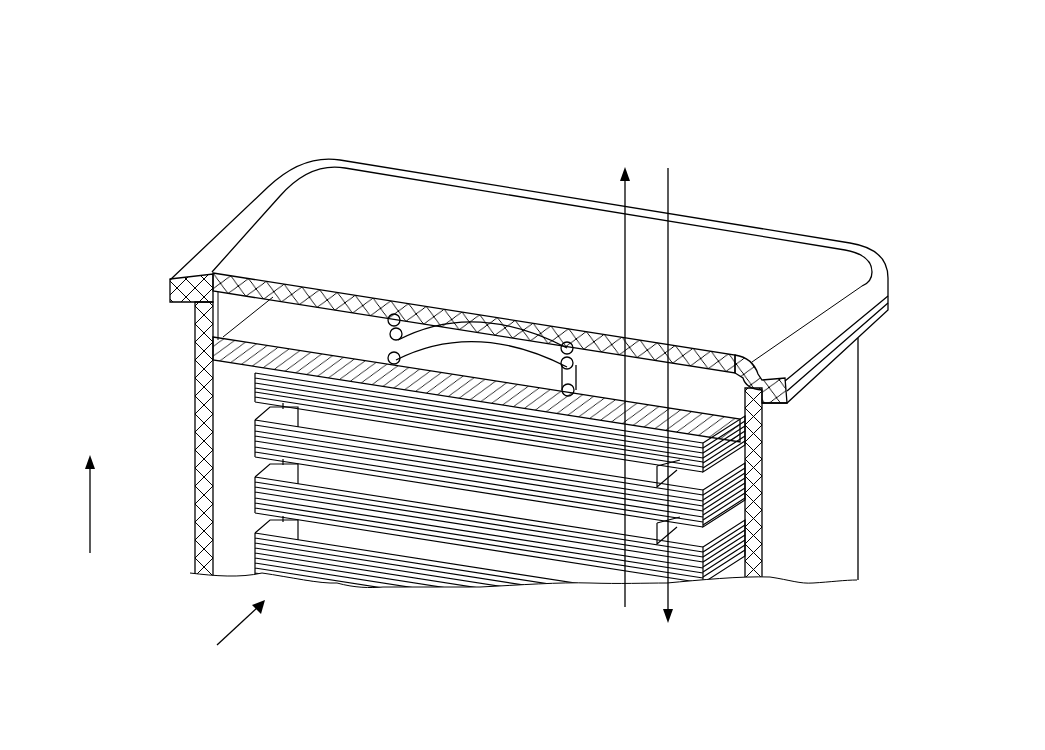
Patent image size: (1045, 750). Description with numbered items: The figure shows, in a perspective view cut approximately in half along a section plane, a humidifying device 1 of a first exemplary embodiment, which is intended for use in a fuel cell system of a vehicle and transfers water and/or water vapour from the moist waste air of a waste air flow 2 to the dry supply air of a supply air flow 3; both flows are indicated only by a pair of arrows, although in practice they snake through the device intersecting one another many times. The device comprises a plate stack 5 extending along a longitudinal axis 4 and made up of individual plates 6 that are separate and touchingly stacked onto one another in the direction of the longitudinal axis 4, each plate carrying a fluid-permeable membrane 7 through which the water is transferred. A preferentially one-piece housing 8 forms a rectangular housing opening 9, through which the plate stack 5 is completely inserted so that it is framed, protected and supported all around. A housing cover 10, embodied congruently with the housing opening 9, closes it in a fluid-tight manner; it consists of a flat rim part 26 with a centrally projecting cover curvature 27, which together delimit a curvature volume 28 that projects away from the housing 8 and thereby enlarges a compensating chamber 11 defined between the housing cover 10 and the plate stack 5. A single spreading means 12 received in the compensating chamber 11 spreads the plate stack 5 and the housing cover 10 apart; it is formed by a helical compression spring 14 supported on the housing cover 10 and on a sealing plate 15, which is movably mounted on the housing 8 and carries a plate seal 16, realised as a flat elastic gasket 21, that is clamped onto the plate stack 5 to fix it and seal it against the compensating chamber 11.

The humidifying device 1 is at (842, 164).
The waste air flow 2 is at (668, 602).
The supply air flow 3 is at (623, 607).
The longitudinal axis 4 is at (87, 510).
The plate stack 5 is at (440, 508).
The individual plates 6 is at (250, 440).
The fluid-permeable membrane 7 is at (377, 543).
The housing 8 is at (837, 452).
The housing opening 9 is at (208, 283).
The housing cover 10 is at (529, 280).
The compensating chamber 11 is at (321, 331).
The spreading means 12 is at (482, 318).
The helical compression spring 14 is at (422, 343).
The sealing plate 15 is at (198, 352).
The plate seal 16 is at (427, 389).
The flat elastic gasket 21 is at (215, 388).
The flat rim part 26 is at (277, 233).
The cover curvature 27 is at (723, 260).
The curvature volume 28 is at (707, 375).